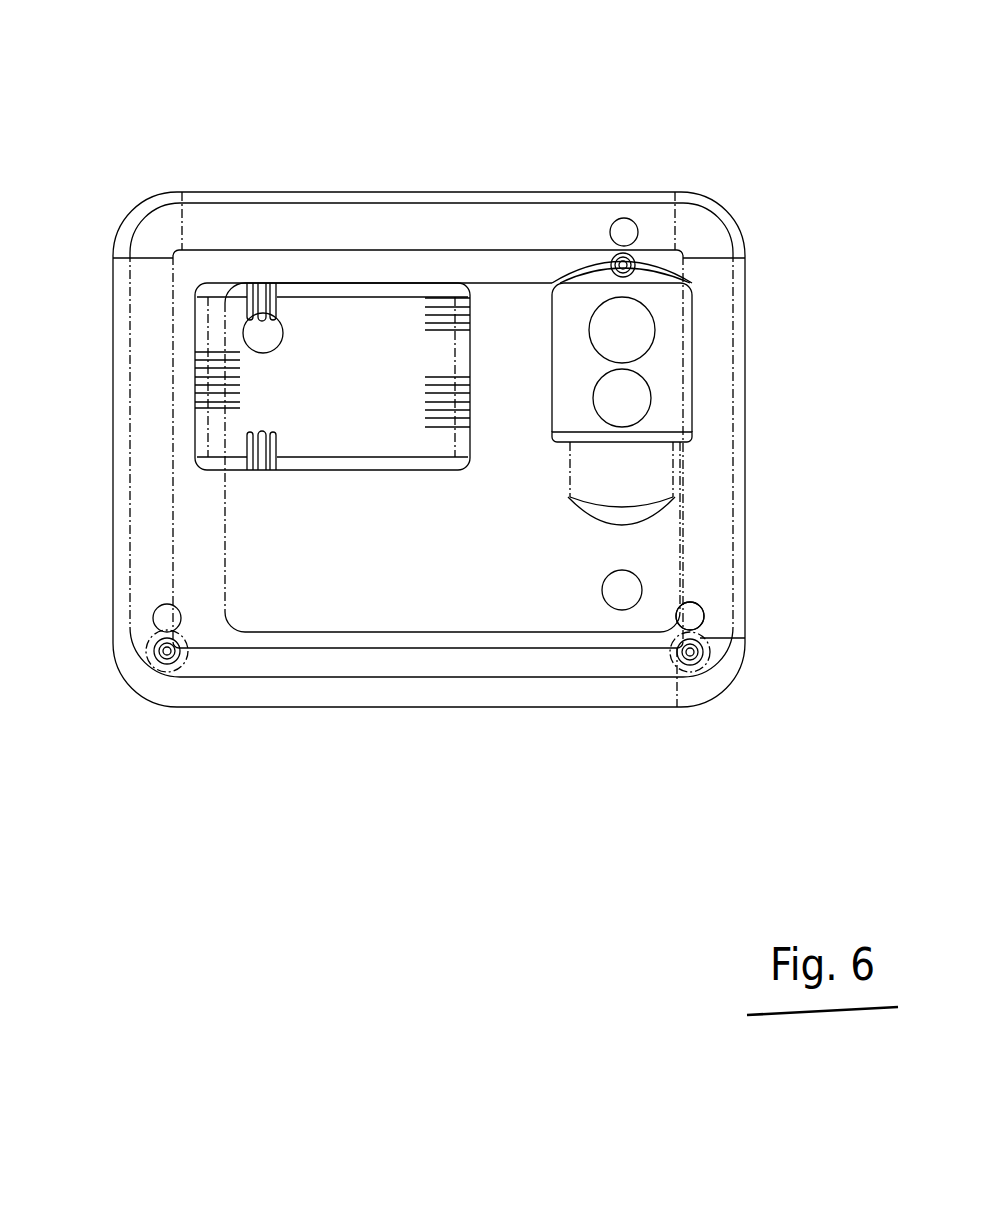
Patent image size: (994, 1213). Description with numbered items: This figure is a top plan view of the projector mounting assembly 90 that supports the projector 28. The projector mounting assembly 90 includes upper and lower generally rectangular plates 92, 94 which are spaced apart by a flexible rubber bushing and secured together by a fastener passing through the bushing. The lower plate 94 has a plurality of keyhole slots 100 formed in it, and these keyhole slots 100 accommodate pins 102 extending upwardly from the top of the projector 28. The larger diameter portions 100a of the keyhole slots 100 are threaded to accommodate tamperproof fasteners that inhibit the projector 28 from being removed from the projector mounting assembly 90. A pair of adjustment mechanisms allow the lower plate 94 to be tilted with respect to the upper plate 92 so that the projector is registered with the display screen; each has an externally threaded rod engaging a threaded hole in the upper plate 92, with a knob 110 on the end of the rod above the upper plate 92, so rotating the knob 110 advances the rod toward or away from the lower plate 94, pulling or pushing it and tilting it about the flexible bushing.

The projector mounting assembly 90 is at (443, 401).
The projector 28 is at (412, 698).
The lower plate 94 is at (140, 465).
The upper plate 92 is at (535, 613).
The knob 110 is at (285, 338).
The keyhole slots 100 is at (625, 232).
The larger diameter portions of the keyhole slots 100a is at (693, 605).
The pins 102 is at (625, 265).